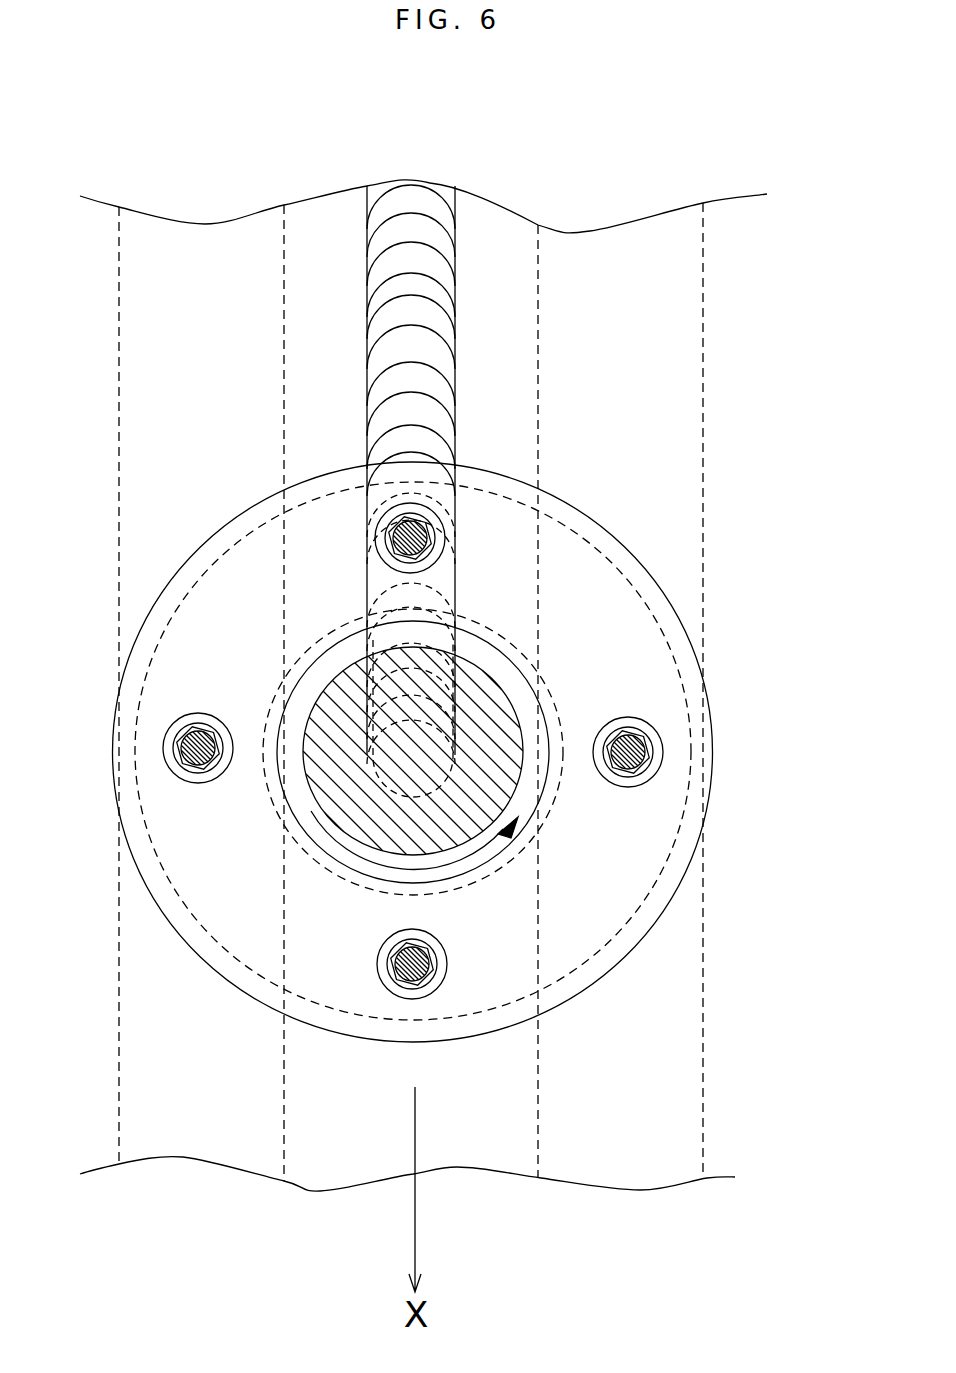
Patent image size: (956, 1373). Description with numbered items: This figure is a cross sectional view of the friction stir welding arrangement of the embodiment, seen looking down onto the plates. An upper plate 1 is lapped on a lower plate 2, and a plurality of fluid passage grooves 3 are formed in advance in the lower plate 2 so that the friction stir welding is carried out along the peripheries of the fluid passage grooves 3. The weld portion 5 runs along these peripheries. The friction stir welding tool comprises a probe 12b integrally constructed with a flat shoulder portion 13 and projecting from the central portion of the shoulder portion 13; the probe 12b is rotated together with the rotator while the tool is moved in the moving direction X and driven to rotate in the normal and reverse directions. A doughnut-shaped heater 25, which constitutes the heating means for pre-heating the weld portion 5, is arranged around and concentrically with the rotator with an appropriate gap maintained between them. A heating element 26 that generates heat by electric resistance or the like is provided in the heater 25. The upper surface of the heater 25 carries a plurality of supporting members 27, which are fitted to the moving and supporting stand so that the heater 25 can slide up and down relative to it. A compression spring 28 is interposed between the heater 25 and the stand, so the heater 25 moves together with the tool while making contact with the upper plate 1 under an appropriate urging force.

The upper plate 1 is at (620, 690).
The lower plate 2 is at (615, 330).
The fluid passage grooves 3 is at (147, 412).
The weld portion 5 is at (437, 297).
The probe 12b is at (427, 757).
The shoulder portion 13 is at (480, 692).
The heater 25 is at (464, 752).
The heating element 26 is at (620, 886).
The supporting members 27 is at (637, 740).
The compression spring 28 is at (658, 757).